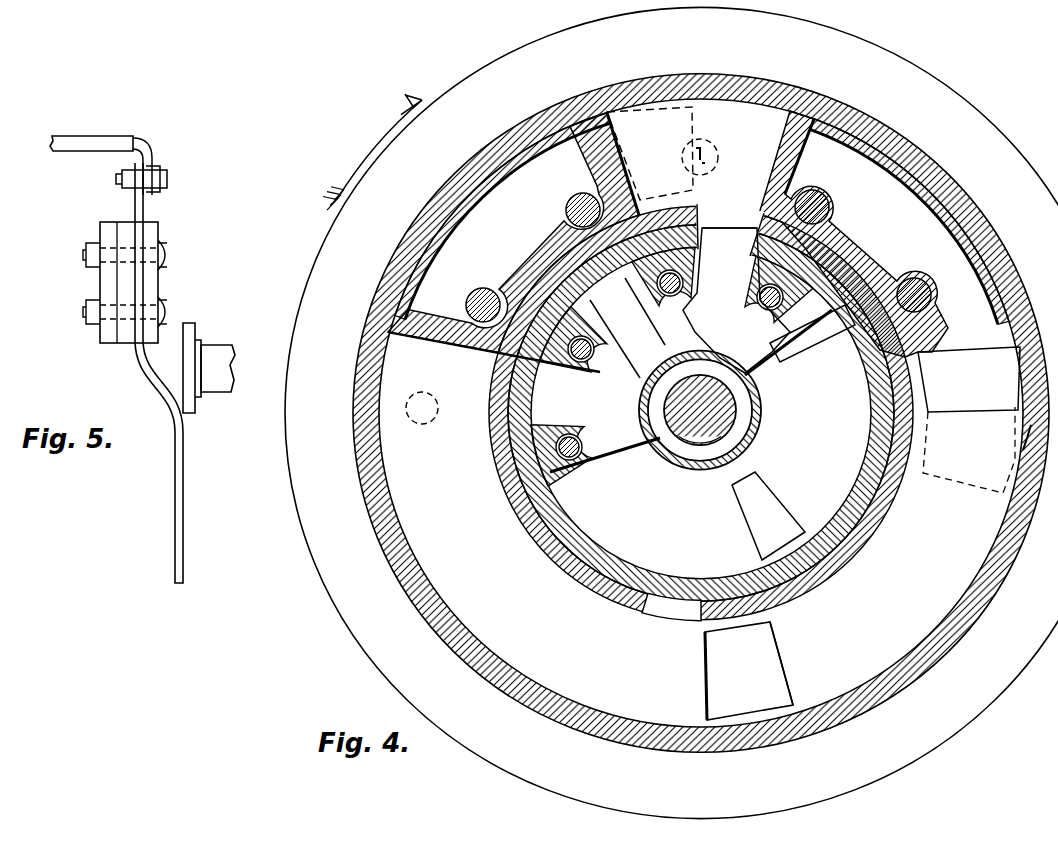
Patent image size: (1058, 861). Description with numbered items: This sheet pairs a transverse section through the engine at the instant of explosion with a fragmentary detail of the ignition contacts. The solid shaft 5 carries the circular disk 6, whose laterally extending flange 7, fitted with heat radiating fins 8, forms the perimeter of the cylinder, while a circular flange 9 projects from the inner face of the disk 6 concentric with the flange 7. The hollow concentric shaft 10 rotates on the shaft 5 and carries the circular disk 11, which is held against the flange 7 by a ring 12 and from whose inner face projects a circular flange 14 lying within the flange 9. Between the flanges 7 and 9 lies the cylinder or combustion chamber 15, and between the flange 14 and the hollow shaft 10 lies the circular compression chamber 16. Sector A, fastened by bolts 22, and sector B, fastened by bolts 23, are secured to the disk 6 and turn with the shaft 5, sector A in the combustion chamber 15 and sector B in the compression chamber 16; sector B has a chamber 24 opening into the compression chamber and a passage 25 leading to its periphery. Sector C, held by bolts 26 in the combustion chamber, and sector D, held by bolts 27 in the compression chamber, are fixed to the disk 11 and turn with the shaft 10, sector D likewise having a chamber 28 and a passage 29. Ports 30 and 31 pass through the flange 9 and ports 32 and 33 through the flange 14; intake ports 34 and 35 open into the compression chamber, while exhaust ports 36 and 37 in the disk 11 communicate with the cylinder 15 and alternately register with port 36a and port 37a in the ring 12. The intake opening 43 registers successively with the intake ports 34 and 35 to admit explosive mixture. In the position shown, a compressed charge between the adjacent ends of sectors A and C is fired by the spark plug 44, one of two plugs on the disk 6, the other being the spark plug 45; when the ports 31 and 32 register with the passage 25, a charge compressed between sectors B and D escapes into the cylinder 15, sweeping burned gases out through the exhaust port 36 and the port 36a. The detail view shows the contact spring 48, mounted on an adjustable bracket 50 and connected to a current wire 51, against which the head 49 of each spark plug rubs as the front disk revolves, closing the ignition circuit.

In FIG. 4, the solid shaft 5 is at (702, 448).
In FIG. 4, the circular disk 6 is at (436, 371).
In FIG. 4, the laterally extending flange 7 is at (935, 650).
In FIG. 4, the heat radiating fins 8 is at (322, 582).
In FIG. 4, the circular flange 9 is at (538, 544).
In FIG. 4, the hollow concentric shaft 10 is at (742, 440).
In FIG. 4, the circular disk 11 is at (984, 553).
In FIG. 4, the ring 12 is at (725, 683).
In FIG. 4, the circular flange 14 is at (874, 434).
In FIG. 4, the cylinder or combustion chamber 15 is at (558, 610).
In FIG. 4, the circular compression chamber 16 is at (807, 488).
In FIG. 4, the bolts 22 is at (566, 211).
In FIG. 4, the bolts 23 is at (586, 355).
In FIG. 4, the chamber 24 is at (604, 414).
In FIG. 4, the passage 25 is at (590, 398).
In FIG. 4, the bolts 26 is at (832, 205).
In FIG. 4, the bolts 27 is at (766, 308).
In FIG. 4, the chamber 28 is at (736, 300).
In FIG. 4, the passage 29 is at (722, 238).
In FIG. 4, the port 30 is at (672, 610).
In FIG. 4, the port 31 is at (498, 378).
In FIG. 4, the port 32 is at (510, 403).
In FIG. 4, the port 33 is at (735, 232).
In FIG. 4, the intake port 34 is at (828, 355).
In FIG. 4, the intake port 35 is at (742, 528).
In FIG. 4, the exhaust port 36 is at (1040, 432).
In FIG. 4, the port 36a is at (969, 377).
In FIG. 4, the exhaust port 37 is at (786, 672).
In FIG. 4, the port 37a is at (680, 108).
In FIG. 4, the intake opening 43 is at (805, 345).
In FIG. 4, the spark plug 44 is at (704, 146).
In FIG. 5, the spark plug 44 is at (226, 350).
In FIG. 4, the spark plug 45 is at (422, 426).
In FIG. 5, the contact spring 48 is at (174, 524).
In FIG. 5, the head 49 is at (183, 364).
In FIG. 5, the adjustable bracket 50 is at (152, 281).
In FIG. 5, the current wire 51 is at (146, 140).
In FIG. 4, the sector A is at (610, 131).
In FIG. 4, the sector B is at (650, 468).
In FIG. 4, the sector C is at (786, 133).
In FIG. 4, the sector D is at (769, 395).